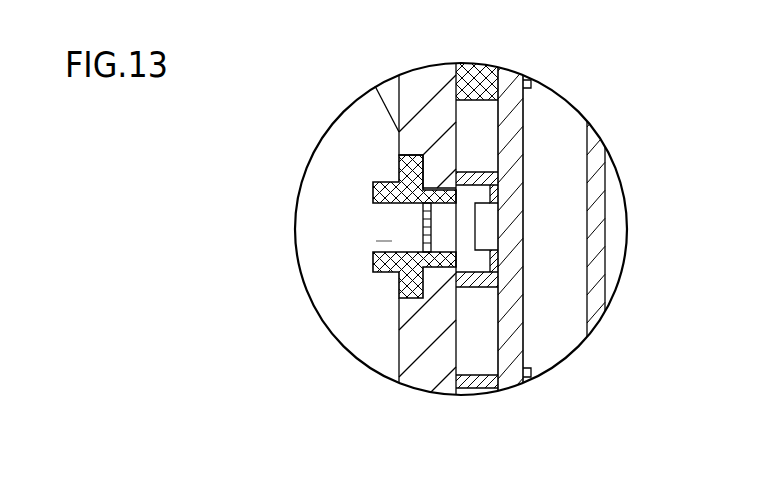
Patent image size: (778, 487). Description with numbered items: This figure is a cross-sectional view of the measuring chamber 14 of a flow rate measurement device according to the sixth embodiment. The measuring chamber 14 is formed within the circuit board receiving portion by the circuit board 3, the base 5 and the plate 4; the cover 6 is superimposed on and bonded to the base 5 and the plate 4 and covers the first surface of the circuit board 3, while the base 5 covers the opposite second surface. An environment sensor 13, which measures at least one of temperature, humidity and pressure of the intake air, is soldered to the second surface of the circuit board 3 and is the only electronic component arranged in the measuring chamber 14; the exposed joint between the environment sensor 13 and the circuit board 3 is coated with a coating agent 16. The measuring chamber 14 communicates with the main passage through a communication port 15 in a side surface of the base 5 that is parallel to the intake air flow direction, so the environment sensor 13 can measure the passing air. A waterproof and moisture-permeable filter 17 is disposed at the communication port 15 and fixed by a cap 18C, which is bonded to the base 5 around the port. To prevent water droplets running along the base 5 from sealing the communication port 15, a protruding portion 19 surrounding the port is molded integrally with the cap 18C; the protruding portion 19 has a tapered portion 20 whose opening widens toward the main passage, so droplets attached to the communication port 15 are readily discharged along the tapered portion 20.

The circuit board 3 is at (508, 153).
The plate 4 is at (481, 99).
The base 5 is at (399, 147).
The cover 6 is at (607, 213).
The environment sensor 13 is at (483, 232).
The measuring chamber 14 is at (470, 262).
The communication port 15 is at (392, 245).
The coating agent 16 is at (497, 262).
The waterproof and moisture-permeable filter 17 is at (421, 234).
The cap 18C is at (399, 293).
The protruding portion 19 is at (375, 275).
The tapered portion 20 is at (396, 210).